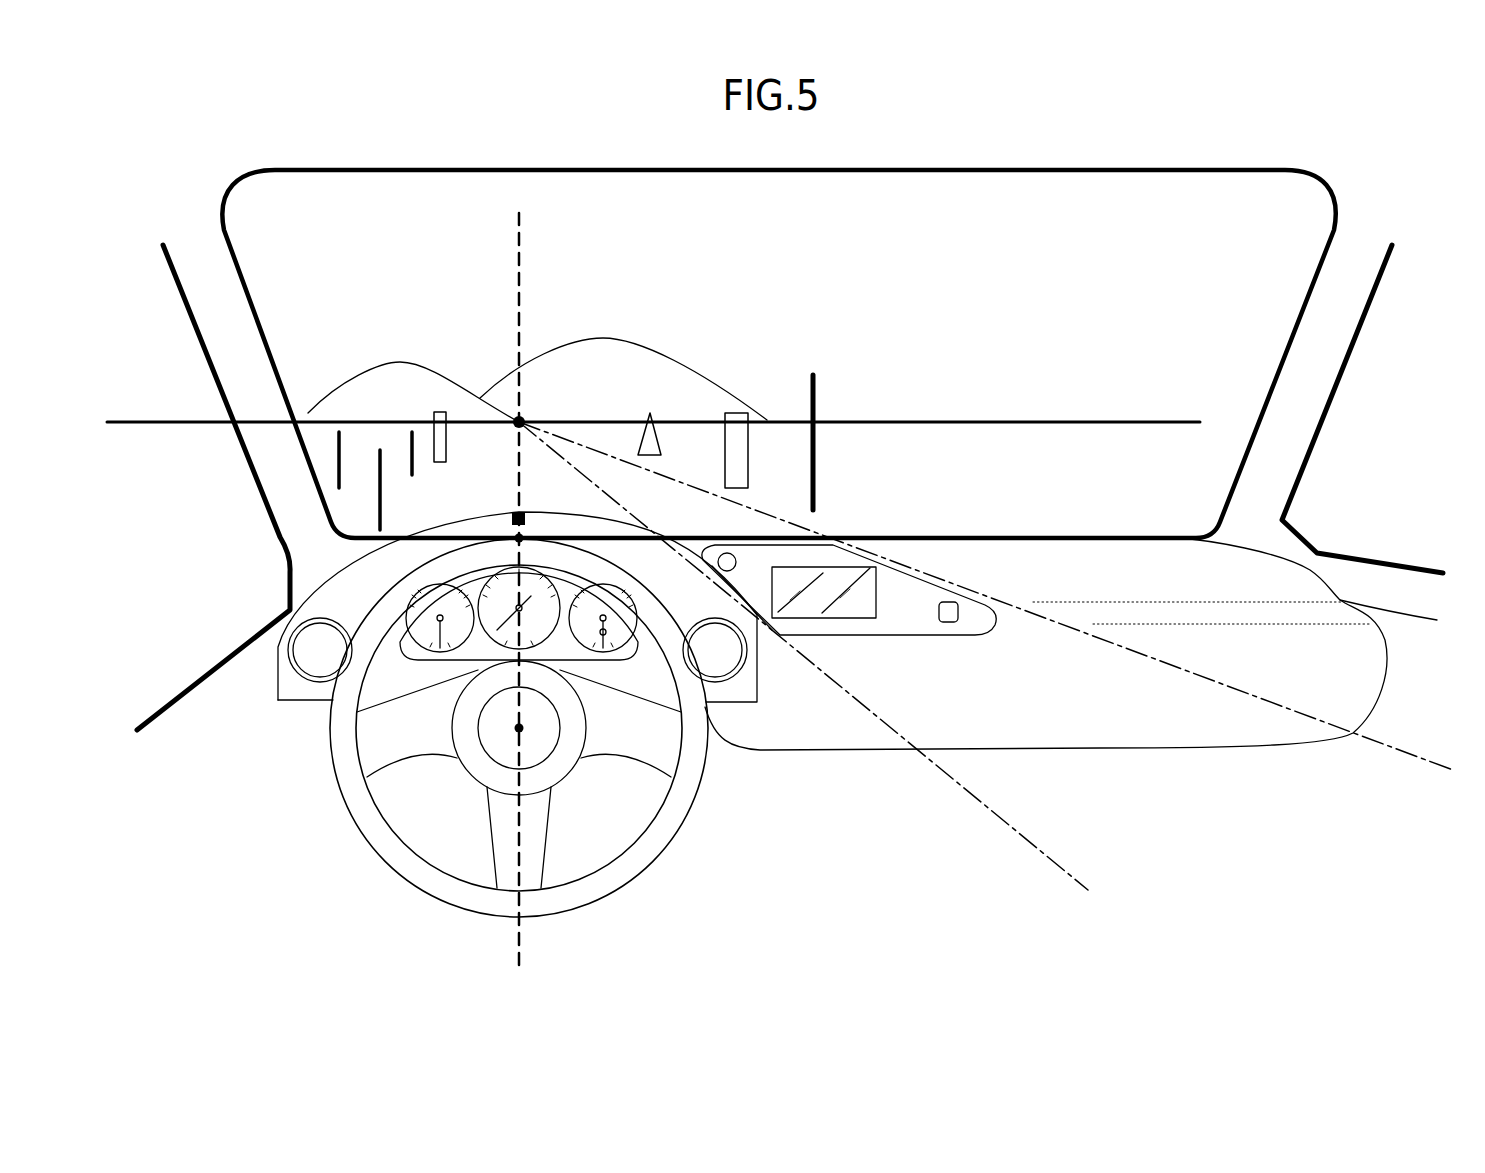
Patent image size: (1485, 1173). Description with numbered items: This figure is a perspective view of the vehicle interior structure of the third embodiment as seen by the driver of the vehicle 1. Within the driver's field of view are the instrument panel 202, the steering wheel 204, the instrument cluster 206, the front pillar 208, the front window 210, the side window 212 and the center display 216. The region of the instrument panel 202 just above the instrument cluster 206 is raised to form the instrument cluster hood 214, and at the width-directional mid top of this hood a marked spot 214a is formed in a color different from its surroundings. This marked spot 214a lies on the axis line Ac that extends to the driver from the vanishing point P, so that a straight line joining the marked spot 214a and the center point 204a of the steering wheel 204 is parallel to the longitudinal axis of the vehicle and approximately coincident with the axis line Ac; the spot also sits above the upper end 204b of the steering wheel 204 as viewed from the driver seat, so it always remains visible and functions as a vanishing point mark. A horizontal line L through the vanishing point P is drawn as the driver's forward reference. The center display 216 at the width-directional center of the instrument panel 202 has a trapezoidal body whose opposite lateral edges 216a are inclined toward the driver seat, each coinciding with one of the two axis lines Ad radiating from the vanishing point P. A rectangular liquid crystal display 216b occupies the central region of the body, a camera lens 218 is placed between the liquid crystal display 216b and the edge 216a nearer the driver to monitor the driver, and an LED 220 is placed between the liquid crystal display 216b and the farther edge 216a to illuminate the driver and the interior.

The vehicle 1 is at (1158, 823).
The instrument panel 202 is at (1087, 552).
The steering wheel 204 is at (668, 815).
The center point of the steering wheel 204a is at (515, 731).
The upper end of the steering wheel 204b is at (507, 519).
The instrument cluster 206 is at (563, 585).
The front pillar 208 is at (220, 328).
The front window 210 is at (744, 284).
The side window 212 is at (155, 540).
The instrument cluster hood 214 is at (527, 513).
The marked spot 214a is at (512, 535).
The center display 216 is at (770, 528).
The lateral edges 216a is at (913, 572).
The liquid crystal display 216b is at (850, 605).
The camera lens 218 is at (727, 552).
The LED 220 is at (948, 623).
The horizontal line L is at (1161, 418).
The vanishing point P is at (525, 417).
The axis line Ac is at (527, 940).
The axis lines Ad is at (1037, 850).